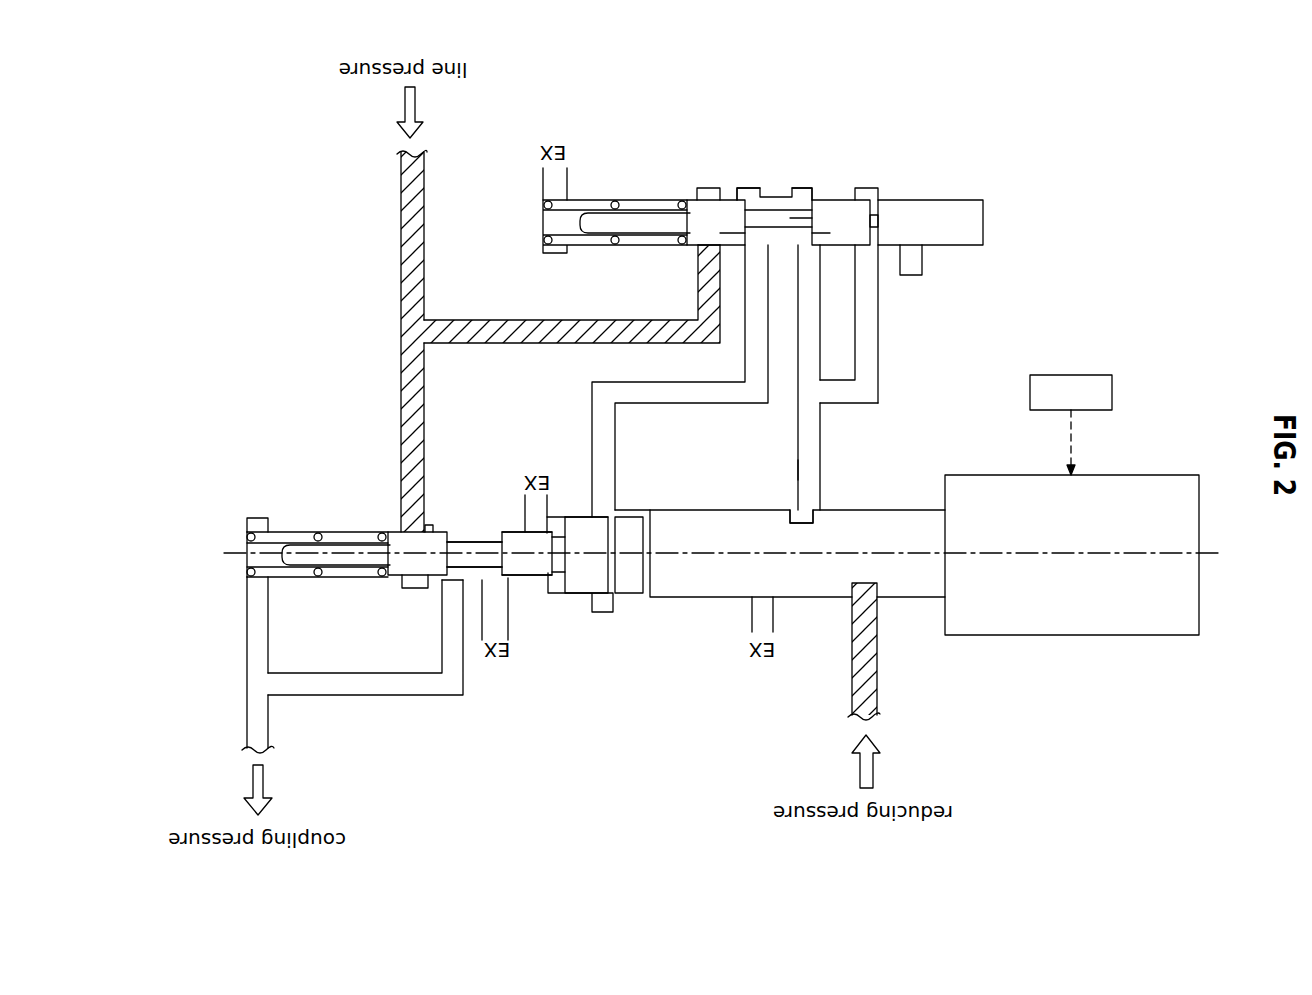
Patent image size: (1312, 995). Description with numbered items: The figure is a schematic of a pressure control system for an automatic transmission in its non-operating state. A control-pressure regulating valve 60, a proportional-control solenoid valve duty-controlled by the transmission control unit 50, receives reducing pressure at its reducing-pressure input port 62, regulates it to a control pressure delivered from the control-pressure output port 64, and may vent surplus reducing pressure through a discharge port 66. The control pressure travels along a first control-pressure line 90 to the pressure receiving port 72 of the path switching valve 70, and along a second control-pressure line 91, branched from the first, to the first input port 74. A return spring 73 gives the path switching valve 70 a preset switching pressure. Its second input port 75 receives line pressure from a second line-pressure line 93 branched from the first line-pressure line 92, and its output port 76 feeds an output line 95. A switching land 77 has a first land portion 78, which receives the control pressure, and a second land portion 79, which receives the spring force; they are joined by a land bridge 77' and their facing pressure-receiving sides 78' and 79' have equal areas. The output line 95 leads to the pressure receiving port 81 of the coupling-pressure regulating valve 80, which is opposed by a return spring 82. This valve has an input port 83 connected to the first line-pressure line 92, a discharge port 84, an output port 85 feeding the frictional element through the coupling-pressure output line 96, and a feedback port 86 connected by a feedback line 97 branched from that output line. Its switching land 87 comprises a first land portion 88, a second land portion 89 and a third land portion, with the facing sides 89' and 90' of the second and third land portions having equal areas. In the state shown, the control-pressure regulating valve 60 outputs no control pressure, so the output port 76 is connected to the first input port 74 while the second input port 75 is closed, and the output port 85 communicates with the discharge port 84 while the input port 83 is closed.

The transmission control unit 50 is at (1070, 375).
The control-pressure regulating valve 60 is at (1150, 637).
The reducing-pressure input port 62 is at (862, 593).
The control-pressure output port 64 is at (803, 517).
The discharge port 66 is at (758, 598).
The path switching valve 70 is at (890, 192).
The pressure receiving port 72 is at (878, 253).
The return spring 73 is at (598, 203).
The first input port 74 is at (803, 247).
The second input port 75 is at (698, 255).
The output port 76 is at (750, 247).
The switching land 77 is at (768, 113).
The land bridge 77' is at (828, 177).
The first land portion 78 is at (793, 161).
The pressure-receiving side 78' is at (872, 181).
The second land portion 79 is at (746, 161).
The pressure-receiving side 79' is at (703, 172).
The coupling-pressure regulating valve 80 is at (332, 523).
The pressure receiving port 81 is at (600, 477).
The return spring 82 is at (247, 537).
The input port 83 is at (413, 530).
The discharge port 84 is at (473, 560).
The output port 85 is at (453, 573).
The feedback port 86 is at (260, 582).
The switching land 87 is at (515, 417).
The first land portion 88 is at (580, 510).
The second land portion 89 is at (511, 482).
The pressure-receiving side 89' is at (550, 611).
The first control-pressure line 90 is at (655, 489).
The pressure-receiving side 90' is at (389, 611).
The second control-pressure line 91 is at (843, 392).
The first line-pressure line 92 is at (400, 395).
The second line-pressure line 93 is at (468, 320).
The output line 95 is at (592, 386).
The coupling-pressure output line 96 is at (358, 695).
The feedback line 97 is at (247, 647).